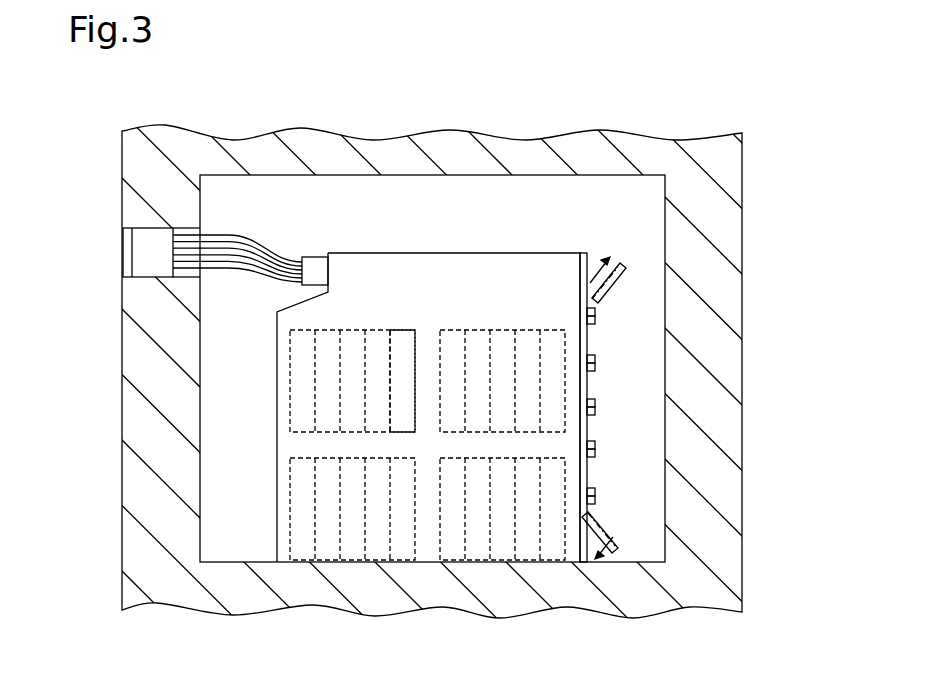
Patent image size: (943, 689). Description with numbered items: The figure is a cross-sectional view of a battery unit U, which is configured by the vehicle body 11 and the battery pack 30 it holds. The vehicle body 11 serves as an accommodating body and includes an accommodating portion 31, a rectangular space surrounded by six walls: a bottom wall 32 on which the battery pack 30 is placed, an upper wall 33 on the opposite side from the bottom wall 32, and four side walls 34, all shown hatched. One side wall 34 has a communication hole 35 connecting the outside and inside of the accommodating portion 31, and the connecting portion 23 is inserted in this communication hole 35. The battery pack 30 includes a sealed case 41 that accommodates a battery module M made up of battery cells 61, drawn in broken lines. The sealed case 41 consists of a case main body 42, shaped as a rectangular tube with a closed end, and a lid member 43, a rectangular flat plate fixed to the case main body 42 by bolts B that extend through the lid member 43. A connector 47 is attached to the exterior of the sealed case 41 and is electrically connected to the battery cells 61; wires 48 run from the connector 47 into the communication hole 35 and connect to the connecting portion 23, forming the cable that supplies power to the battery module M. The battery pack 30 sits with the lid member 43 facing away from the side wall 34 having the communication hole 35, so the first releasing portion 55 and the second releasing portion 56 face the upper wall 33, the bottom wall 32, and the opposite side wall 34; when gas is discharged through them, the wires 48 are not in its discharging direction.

The vehicle body 11 is at (745, 426).
The connecting portion 23 is at (143, 255).
The battery pack 30 is at (276, 522).
The accommodating portion 31 is at (432, 368).
The bottom wall 32 is at (451, 598).
The upper wall 33 is at (440, 138).
The side wall 34 is at (131, 411).
The communication hole 35 is at (138, 230).
The sealed case 41 is at (464, 310).
The case main body 42 is at (535, 253).
The lid member 43 is at (582, 253).
The connector 47 is at (313, 257).
The wires 48 is at (226, 262).
The first releasing portion 55 is at (580, 277).
The second releasing portion 56 is at (581, 565).
The battery cells 61 is at (407, 330).
The battery module M is at (477, 330).
The bolts B is at (596, 311).
The battery unit U is at (100, 128).